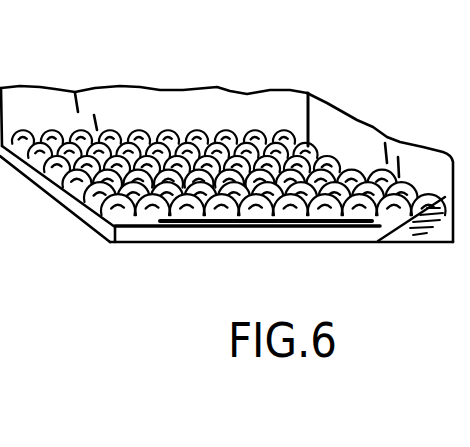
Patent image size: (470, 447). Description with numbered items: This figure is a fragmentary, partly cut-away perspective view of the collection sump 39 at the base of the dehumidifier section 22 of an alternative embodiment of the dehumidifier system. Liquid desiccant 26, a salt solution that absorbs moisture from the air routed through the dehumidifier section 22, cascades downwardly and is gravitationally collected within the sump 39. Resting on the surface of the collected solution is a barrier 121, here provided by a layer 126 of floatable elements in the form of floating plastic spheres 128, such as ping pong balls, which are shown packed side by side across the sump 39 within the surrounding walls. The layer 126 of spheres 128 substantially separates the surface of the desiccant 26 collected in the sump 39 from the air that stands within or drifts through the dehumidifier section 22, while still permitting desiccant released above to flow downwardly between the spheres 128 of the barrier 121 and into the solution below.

The barrier 121 is at (52, 137).
The floating plastic spheres 128 is at (212, 140).
The layer of floatable elements 126 is at (307, 93).
The dehumidifier section 22 is at (378, 128).
The liquid desiccant 26 is at (213, 237).
The collection sump 39 is at (335, 237).